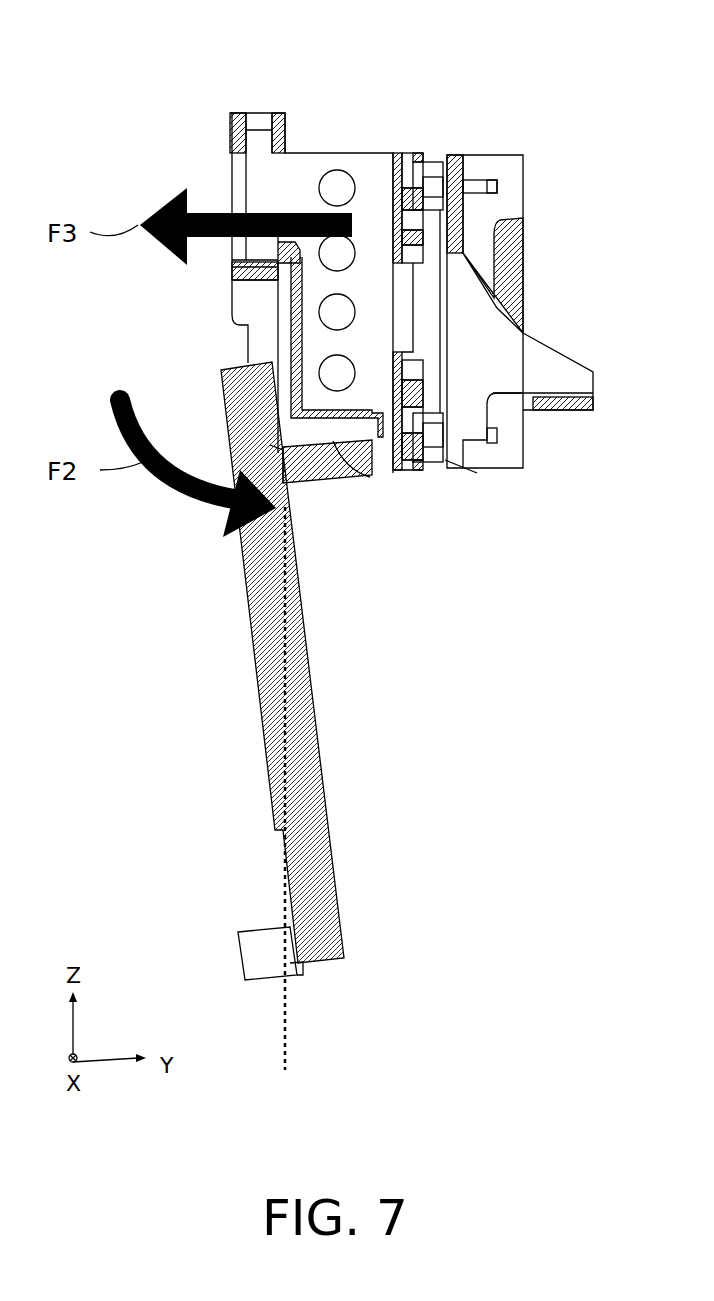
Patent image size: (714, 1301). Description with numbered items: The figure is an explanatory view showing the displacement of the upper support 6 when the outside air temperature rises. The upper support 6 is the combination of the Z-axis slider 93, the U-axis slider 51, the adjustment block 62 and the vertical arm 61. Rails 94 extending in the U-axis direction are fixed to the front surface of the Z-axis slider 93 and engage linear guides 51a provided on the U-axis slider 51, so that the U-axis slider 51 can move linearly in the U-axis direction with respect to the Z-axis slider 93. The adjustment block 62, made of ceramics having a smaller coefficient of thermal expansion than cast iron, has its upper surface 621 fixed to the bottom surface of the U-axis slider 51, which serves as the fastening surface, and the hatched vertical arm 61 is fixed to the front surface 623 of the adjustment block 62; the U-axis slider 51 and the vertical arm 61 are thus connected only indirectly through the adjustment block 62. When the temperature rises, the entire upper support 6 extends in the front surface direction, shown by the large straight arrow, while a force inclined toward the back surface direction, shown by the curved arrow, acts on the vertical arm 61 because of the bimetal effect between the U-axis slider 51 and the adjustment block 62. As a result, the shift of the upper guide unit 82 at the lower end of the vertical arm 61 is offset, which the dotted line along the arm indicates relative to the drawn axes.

The upper support 6 is at (363, 28).
The U-axis slider 51 is at (362, 163).
The linear guide 51a is at (417, 163).
The rail 94 is at (438, 165).
The Z-axis slider 93 is at (508, 168).
The vertical arm 61 is at (258, 632).
The adjustment block 62 is at (313, 487).
The upper surface 621 is at (367, 477).
The front surface 623 is at (282, 458).
The upper guide unit 82 is at (260, 945).